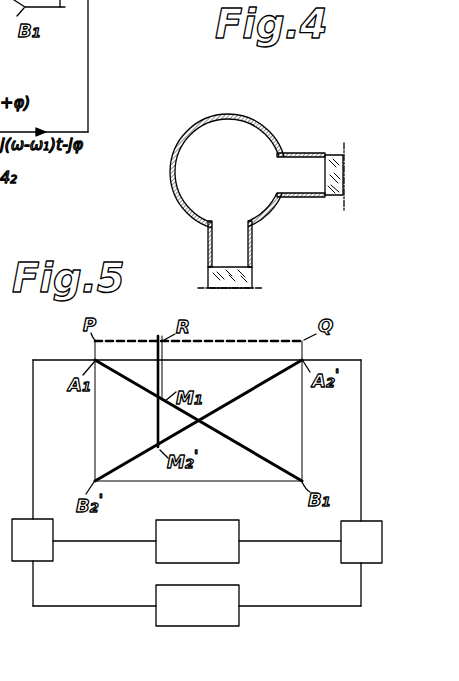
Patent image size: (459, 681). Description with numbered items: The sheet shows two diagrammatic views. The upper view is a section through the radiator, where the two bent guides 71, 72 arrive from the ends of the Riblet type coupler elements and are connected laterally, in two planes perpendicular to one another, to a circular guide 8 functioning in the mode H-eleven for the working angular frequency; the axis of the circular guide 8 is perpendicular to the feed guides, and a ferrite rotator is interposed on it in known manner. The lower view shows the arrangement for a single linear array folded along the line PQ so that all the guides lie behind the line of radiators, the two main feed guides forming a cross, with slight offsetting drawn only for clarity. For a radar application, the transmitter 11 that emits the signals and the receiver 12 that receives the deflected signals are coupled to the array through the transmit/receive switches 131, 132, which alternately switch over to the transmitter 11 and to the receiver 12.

In FIG. 4, the circular guide 8 is at (222, 115).
In FIG. 4, the bent guide 71 is at (250, 280).
In FIG. 4, the bent guide 72 is at (316, 153).
In FIG. 5, the transmitter 11 is at (227, 531).
In FIG. 5, the receiver 12 is at (226, 618).
In FIG. 5, the transmit/receive switch 131 is at (25, 563).
In FIG. 5, the transmit/receive switch 132 is at (366, 562).